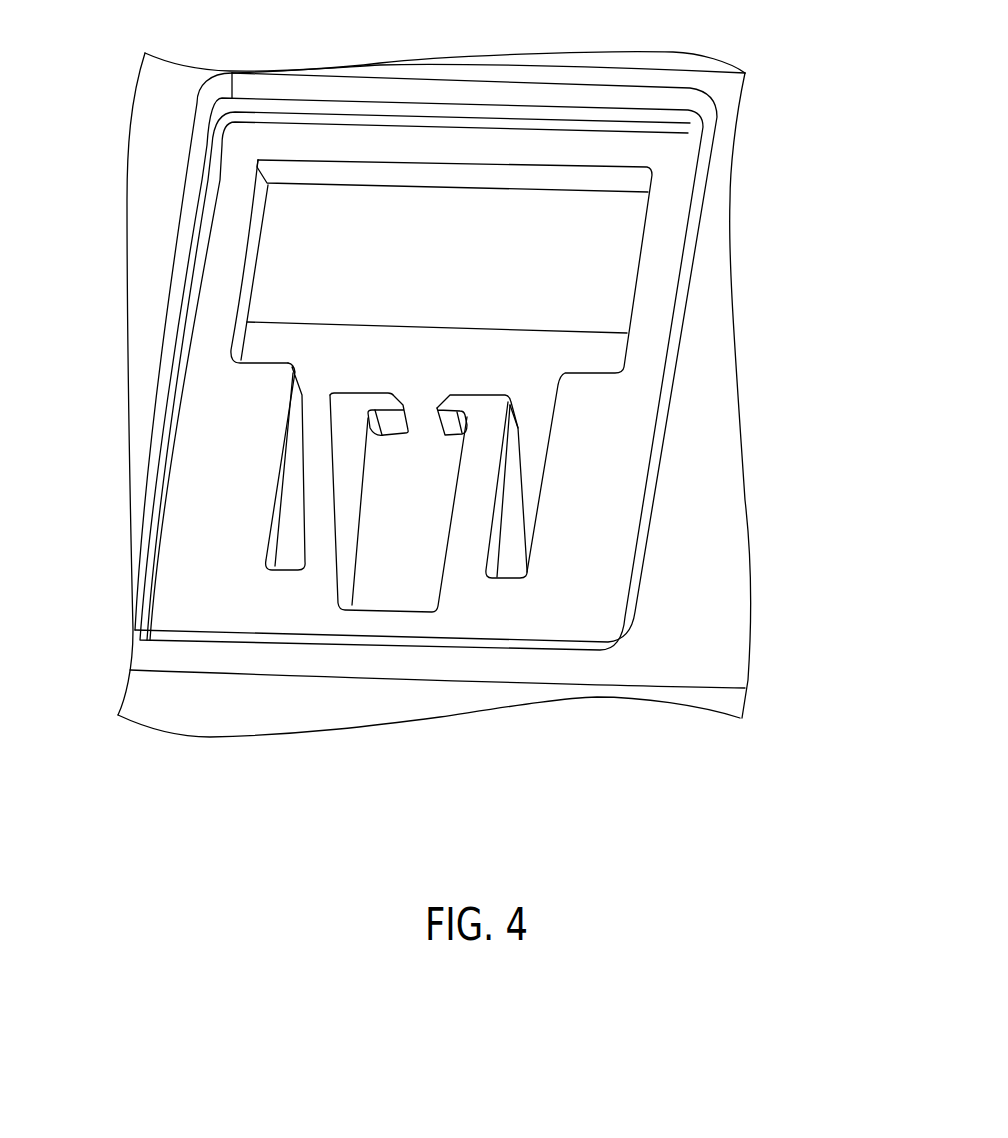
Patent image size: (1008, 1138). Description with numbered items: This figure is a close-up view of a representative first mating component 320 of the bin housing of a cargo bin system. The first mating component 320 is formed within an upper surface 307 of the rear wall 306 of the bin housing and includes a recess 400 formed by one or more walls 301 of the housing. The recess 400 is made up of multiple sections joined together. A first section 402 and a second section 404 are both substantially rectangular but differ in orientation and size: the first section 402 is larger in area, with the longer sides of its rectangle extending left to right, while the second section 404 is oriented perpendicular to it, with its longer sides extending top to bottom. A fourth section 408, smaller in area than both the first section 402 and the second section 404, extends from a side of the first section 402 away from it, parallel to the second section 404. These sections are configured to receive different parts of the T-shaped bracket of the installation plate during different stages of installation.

The first mating component 320 is at (460, 423).
The walls 301 is at (491, 361).
The rear wall 306 is at (426, 361).
The upper surface 307 is at (723, 322).
The recess 400 is at (460, 449).
The first section 402 is at (257, 342).
The second section 404 is at (285, 560).
The fourth section 408 is at (511, 577).